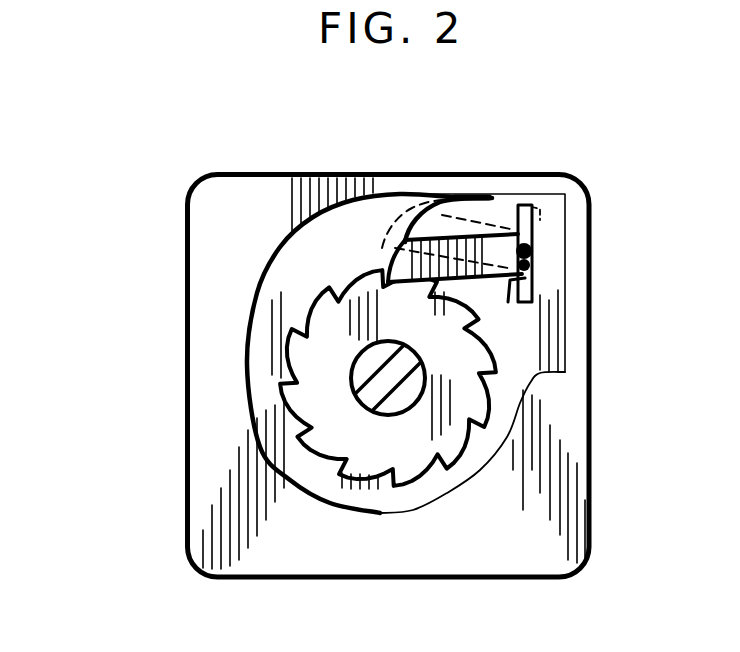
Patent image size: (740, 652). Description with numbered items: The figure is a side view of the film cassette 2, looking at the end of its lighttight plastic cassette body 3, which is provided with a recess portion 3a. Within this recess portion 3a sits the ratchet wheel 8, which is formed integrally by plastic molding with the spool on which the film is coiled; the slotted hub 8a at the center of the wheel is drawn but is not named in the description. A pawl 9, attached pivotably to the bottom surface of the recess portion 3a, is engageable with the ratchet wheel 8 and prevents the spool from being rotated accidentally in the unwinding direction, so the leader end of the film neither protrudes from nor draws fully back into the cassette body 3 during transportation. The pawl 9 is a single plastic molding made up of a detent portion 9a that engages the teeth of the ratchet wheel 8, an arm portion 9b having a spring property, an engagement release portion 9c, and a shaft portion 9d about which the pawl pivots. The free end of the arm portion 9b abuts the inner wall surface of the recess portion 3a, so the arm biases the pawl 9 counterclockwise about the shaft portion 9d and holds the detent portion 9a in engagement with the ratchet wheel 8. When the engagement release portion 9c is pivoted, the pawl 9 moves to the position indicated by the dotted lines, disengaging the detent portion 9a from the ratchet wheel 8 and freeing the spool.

The film cassette 2 is at (150, 465).
The cassette body 3 is at (252, 207).
The recess portion 3a is at (462, 480).
The ratchet wheel 8 is at (283, 385).
The slotted hub / shaft of ratchet wheel 8a is at (404, 402).
The pawl 9 is at (487, 302).
The detent portion 9a is at (385, 267).
The arm portion 9b is at (460, 194).
The engagement release portion 9c is at (535, 291).
The shaft portion 9d is at (533, 252).